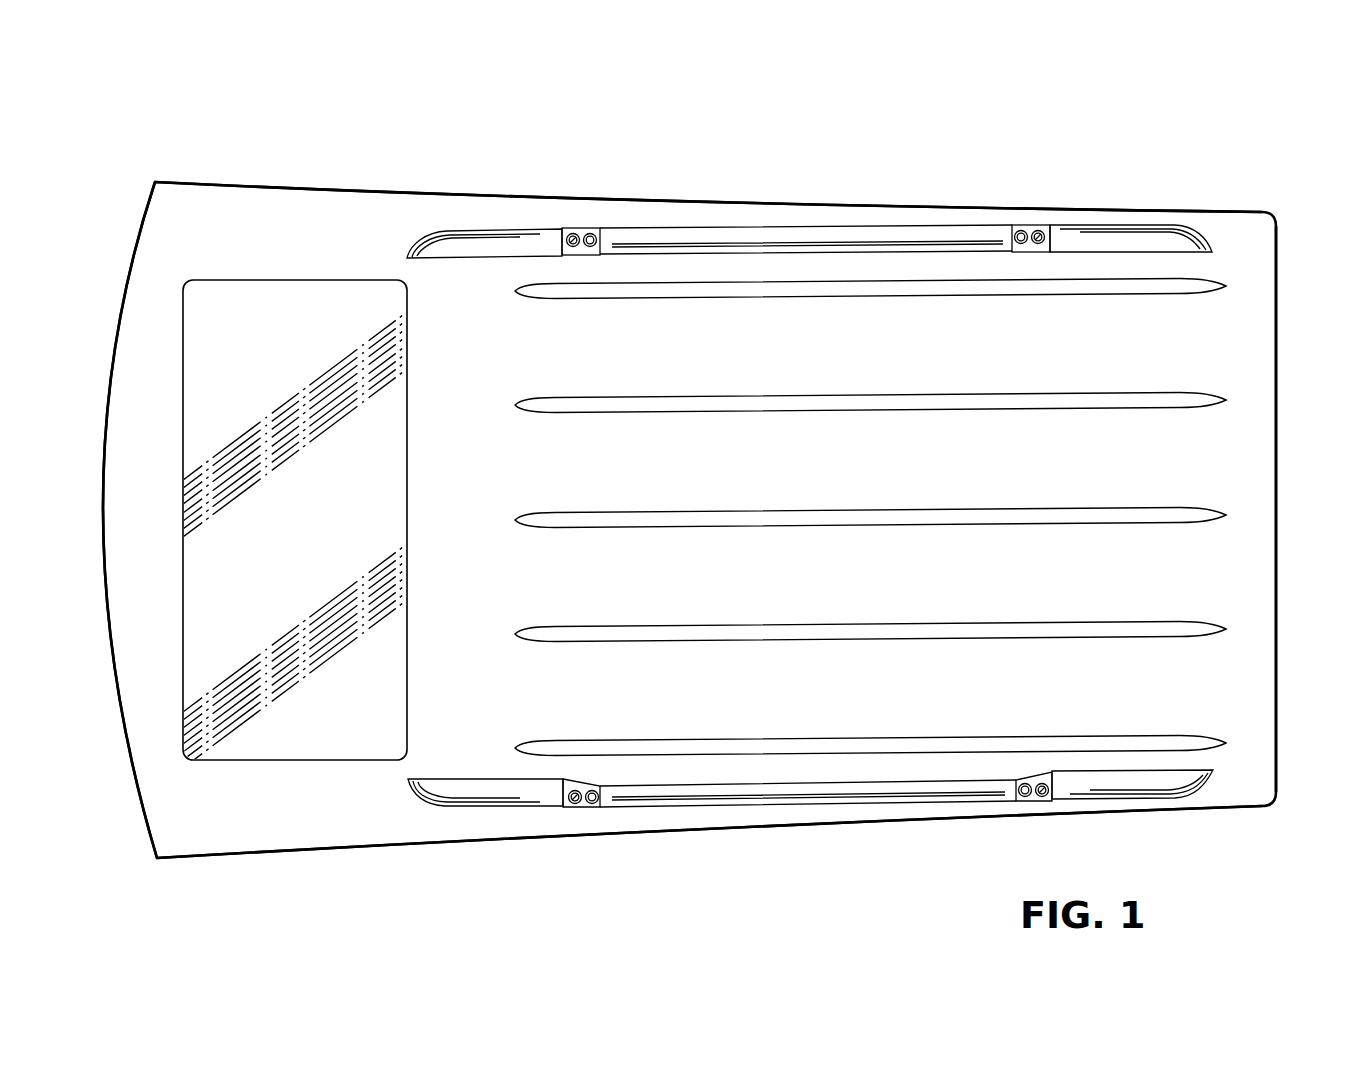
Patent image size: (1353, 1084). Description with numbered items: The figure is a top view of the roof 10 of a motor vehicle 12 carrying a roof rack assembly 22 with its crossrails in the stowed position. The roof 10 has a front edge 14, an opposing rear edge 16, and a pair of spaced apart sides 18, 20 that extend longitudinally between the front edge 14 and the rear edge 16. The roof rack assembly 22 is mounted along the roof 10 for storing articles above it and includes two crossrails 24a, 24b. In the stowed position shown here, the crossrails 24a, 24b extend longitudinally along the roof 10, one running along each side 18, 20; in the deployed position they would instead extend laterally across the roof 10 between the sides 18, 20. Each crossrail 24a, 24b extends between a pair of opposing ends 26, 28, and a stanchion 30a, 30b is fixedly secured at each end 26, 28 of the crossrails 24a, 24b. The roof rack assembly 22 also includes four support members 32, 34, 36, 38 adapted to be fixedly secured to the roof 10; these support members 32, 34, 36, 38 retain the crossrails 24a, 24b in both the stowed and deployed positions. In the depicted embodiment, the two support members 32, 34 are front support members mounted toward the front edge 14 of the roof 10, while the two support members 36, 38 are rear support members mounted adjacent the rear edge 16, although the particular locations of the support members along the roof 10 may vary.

The roof 10 is at (260, 210).
The motor vehicle 12 is at (1243, 176).
The front edge 14 is at (133, 236).
The rear edge 16 is at (1284, 332).
The side 18 is at (706, 838).
The side 20 is at (692, 205).
The roof rack assembly 22 is at (785, 194).
The crossrail 24a is at (822, 792).
The crossrail 24b is at (875, 240).
The end 26 is at (600, 230).
The end 28 is at (1013, 226).
The stanchion 30a is at (1030, 225).
The stanchion 30b is at (575, 233).
The support member 32 is at (513, 245).
The support member 34 is at (486, 790).
The support member 36 is at (1120, 243).
The support member 38 is at (1118, 787).